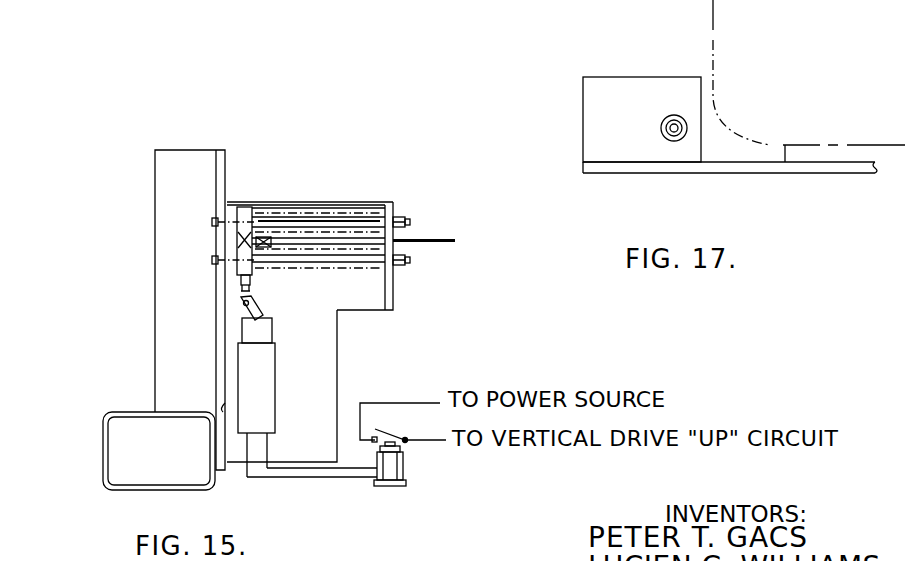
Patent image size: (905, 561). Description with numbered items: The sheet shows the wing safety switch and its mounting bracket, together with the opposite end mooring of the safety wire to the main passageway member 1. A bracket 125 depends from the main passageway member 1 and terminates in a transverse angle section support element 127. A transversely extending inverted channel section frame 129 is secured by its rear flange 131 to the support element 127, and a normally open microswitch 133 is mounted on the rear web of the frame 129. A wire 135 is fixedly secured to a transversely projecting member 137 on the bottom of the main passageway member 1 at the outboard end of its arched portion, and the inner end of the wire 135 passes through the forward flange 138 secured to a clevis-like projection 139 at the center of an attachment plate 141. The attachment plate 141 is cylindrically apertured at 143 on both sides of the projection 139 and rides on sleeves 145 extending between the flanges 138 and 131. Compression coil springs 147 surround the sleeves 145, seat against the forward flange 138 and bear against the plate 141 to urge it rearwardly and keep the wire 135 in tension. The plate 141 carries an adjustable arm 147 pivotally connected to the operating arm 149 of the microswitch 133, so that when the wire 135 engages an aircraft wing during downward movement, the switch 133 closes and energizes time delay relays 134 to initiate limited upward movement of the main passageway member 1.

In FIG. 17, the main passageway member 1 is at (713, 22).
In FIG. 15, the bracket 125 is at (104, 471).
In FIG. 15, the transverse angle section support element 127 is at (155, 270).
In FIG. 15, the inverted channel section frame 129 is at (340, 366).
In FIG. 15, the rear flange 131 is at (228, 468).
In FIG. 15, the microswitch 133 is at (275, 352).
In FIG. 15, the time delay relays 134 is at (405, 471).
In FIG. 15, the wire 135 is at (427, 236).
In FIG. 17, the wire 135 is at (666, 118).
In FIG. 17, the transversely projecting member 137 is at (705, 173).
In FIG. 15, the forward flange 138 is at (390, 202).
In FIG. 15, the clevis-like projection 139 is at (270, 218).
In FIG. 15, the attachment plate 141 is at (243, 203).
In FIG. 15, the cylindrical apertures 143 is at (245, 246).
In FIG. 15, the sleeves 145 is at (358, 213).
In FIG. 15, the compression coil springs 147 is at (250, 283).
In FIG. 15, the operating arm 149 is at (250, 302).